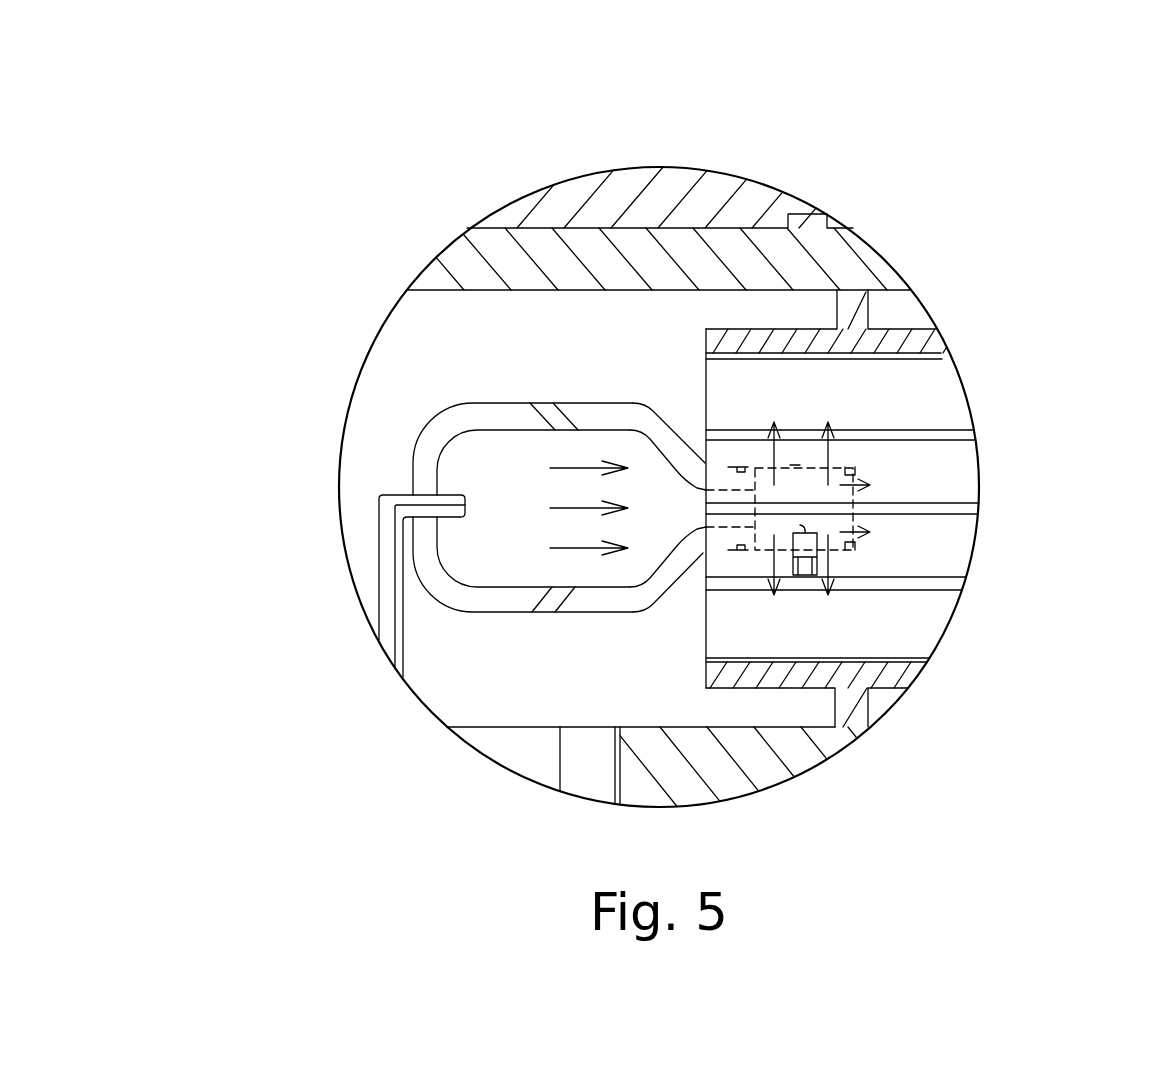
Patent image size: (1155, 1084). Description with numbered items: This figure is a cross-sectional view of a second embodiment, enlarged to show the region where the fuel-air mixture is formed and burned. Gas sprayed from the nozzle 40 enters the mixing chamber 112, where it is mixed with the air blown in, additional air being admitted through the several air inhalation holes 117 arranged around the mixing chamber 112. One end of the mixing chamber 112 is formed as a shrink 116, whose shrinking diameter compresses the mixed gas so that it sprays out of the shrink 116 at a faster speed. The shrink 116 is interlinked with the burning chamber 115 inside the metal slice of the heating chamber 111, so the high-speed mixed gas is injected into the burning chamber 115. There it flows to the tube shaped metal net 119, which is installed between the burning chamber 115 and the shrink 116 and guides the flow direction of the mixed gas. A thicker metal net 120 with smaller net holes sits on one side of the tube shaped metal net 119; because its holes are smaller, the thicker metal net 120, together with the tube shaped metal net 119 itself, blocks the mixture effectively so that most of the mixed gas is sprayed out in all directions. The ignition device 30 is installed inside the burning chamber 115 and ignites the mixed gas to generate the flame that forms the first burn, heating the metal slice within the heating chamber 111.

The ignition device 30 is at (840, 558).
The nozzle 40 is at (380, 528).
The heating chamber 111 is at (883, 677).
The mixing chamber 112 is at (627, 417).
The burning chamber 115 is at (807, 483).
The shrink 116 is at (720, 478).
The air inhalation holes 117 is at (540, 403).
The tube shaped metal net 119 is at (795, 465).
The thicker metal net 120 is at (850, 508).